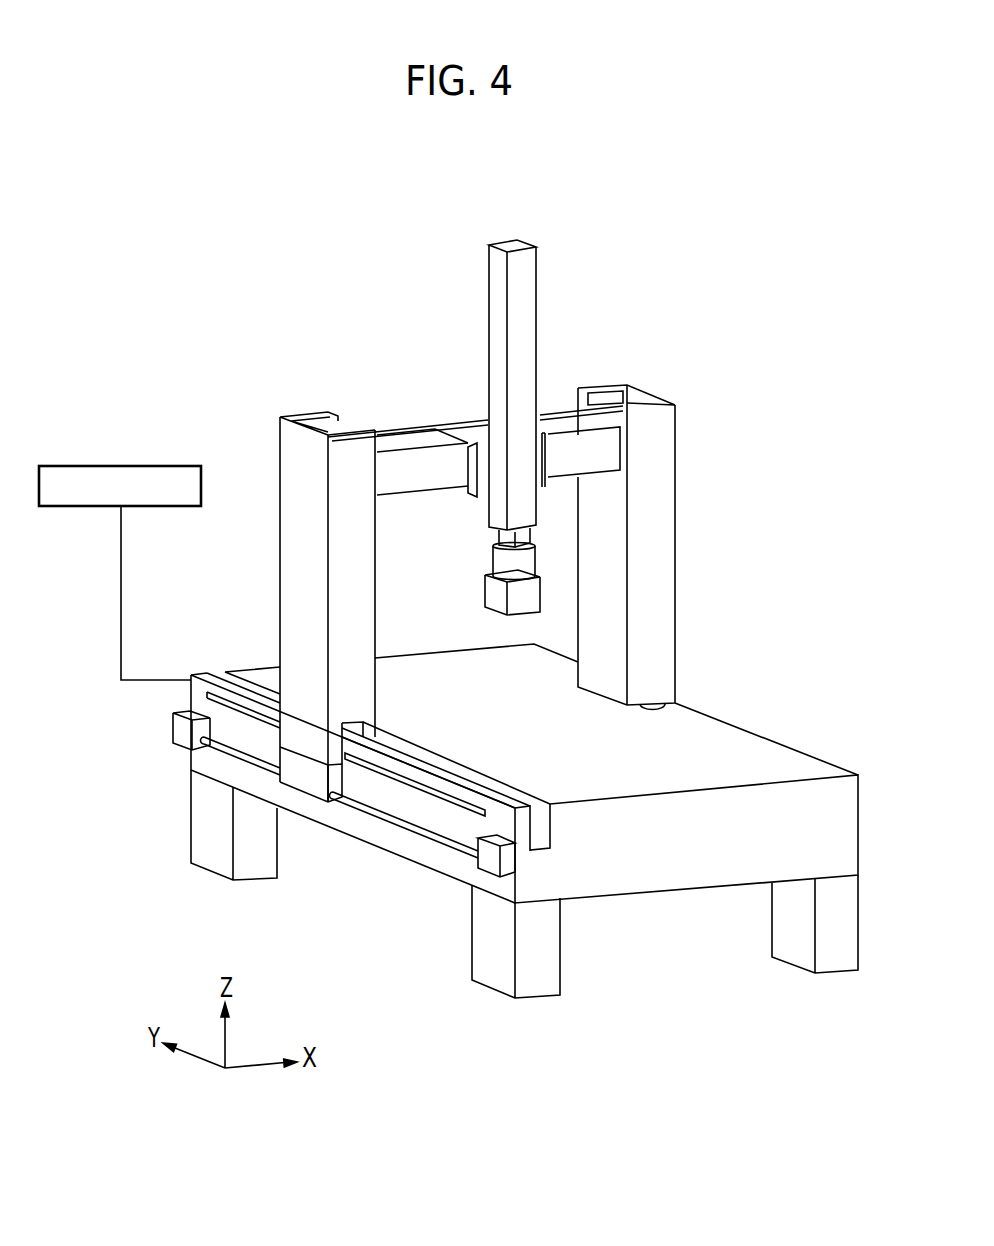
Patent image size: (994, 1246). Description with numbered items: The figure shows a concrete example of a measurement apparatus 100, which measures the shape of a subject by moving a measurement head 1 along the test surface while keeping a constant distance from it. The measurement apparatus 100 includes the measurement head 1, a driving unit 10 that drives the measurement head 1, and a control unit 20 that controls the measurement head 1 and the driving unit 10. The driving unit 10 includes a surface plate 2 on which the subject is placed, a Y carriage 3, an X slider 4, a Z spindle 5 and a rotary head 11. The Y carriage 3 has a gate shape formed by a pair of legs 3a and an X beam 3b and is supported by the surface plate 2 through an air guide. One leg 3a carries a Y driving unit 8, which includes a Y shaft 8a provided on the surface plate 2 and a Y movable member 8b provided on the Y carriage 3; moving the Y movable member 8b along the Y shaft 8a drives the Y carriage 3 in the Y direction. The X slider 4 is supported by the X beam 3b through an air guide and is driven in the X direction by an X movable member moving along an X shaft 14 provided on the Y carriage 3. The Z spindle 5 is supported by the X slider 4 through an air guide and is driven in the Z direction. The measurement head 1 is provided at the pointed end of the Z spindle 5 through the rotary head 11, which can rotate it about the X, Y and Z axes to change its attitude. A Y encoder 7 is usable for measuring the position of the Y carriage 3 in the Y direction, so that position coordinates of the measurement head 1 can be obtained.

The measurement apparatus 100 is at (638, 270).
The driving unit 10 is at (680, 378).
The control unit 20 is at (120, 466).
The measurement head 1 is at (495, 594).
The surface plate 2 is at (705, 758).
The Y carriage 3 is at (738, 437).
The leg 3a is at (655, 502).
The X beam 3b is at (608, 452).
The X slider 4 is at (477, 428).
The Z spindle 5 is at (490, 508).
The Y encoder 7 is at (435, 790).
The Y driving unit 8 is at (134, 766).
The Y shaft 8a is at (230, 748).
The Y movable member 8b is at (293, 777).
The rotary head 11 is at (488, 557).
The X shaft 14 is at (402, 422).